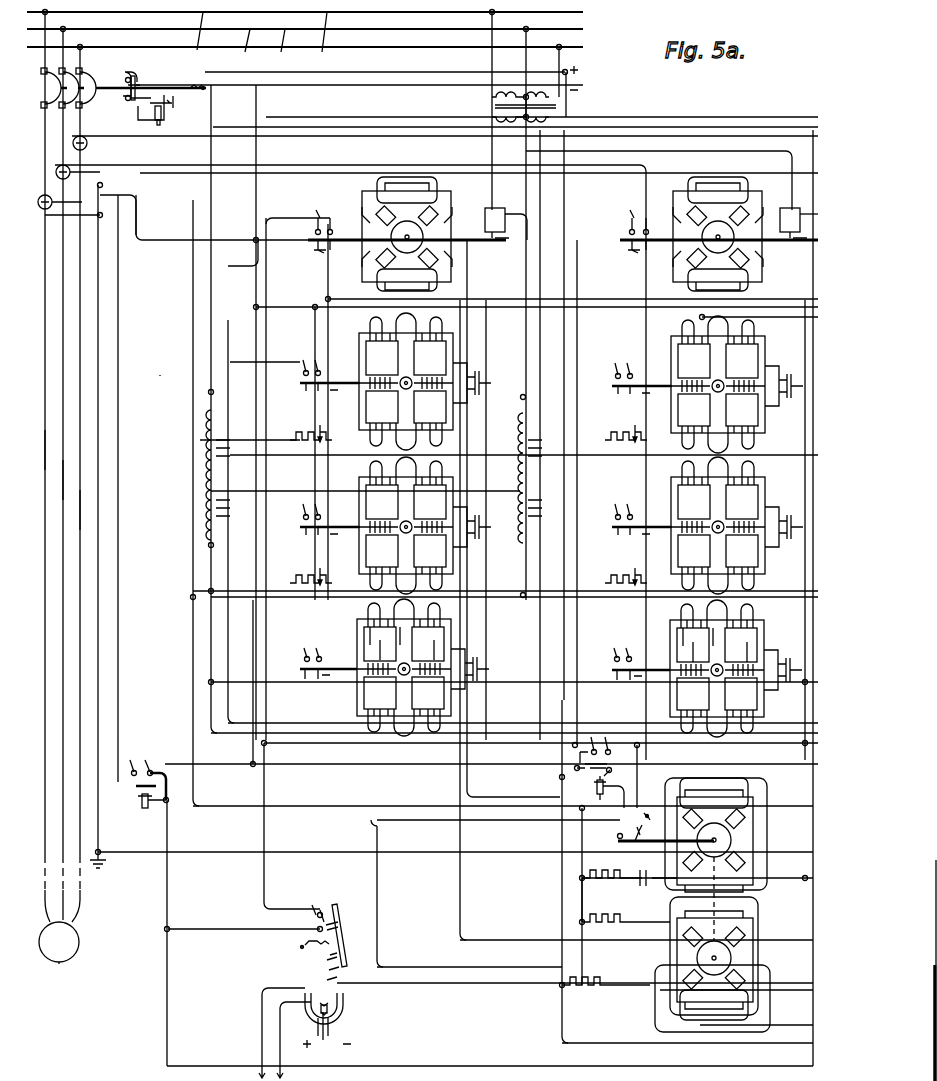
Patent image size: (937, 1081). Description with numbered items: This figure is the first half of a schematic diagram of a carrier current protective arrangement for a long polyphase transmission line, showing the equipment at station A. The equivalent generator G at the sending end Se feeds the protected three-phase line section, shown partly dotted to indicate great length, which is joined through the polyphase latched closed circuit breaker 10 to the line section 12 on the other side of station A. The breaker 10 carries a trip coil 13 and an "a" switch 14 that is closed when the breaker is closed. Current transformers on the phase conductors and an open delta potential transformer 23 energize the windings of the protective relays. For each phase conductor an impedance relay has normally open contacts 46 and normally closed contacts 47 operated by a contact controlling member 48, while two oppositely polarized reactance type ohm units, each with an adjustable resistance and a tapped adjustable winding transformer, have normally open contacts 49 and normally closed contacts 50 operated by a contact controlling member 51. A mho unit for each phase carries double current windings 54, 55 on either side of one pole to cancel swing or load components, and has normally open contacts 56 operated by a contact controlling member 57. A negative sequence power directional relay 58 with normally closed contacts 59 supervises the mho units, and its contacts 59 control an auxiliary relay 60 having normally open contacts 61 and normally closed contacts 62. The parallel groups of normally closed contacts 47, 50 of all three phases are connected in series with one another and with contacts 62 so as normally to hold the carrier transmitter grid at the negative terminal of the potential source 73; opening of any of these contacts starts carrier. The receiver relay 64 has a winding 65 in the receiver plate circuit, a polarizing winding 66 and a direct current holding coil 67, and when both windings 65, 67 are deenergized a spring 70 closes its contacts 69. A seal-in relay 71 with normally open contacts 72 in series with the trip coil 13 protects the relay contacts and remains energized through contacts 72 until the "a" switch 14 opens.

The electric circuit interrupting device 10 is at (42, 92).
The line section 12 is at (196, 50).
The trip coil 13 is at (164, 112).
The "a" switch 14 is at (137, 86).
The open delta potential transformer 23 is at (477, 113).
The normally open contacts 46 is at (320, 214).
The normally closed contacts 47 is at (318, 256).
The contact controlling member 48 is at (338, 236).
The normally open contacts 49 is at (463, 427).
The normally closed contacts 50 is at (473, 469).
The contact controlling member 51 is at (348, 388).
The current winding 54 is at (555, 640).
The current winding 55 is at (568, 654).
The normally open contacts 56 is at (466, 643).
The contact controlling member 57 is at (326, 678).
The negative sequence power directional relay 58 is at (640, 903).
The normally closed contacts 59 is at (618, 838).
The auxiliary relay 60 is at (596, 790).
The normally open contacts 61 is at (595, 739).
The normally closed contacts 62 is at (612, 770).
The receiver relay 64 is at (314, 973).
The winding 65 is at (342, 998).
The polarizing winding 66 is at (324, 1038).
The direct current holding coil 67 is at (342, 957).
The contacts 69 is at (320, 910).
The spring 70 is at (300, 942).
The seal-in relay 71 is at (139, 806).
The normally open contacts 72 is at (147, 772).
The potential source 73 is at (570, 76).
The station A is at (168, 349).
The equivalent generator G is at (59, 942).
The sending end Se is at (68, 967).